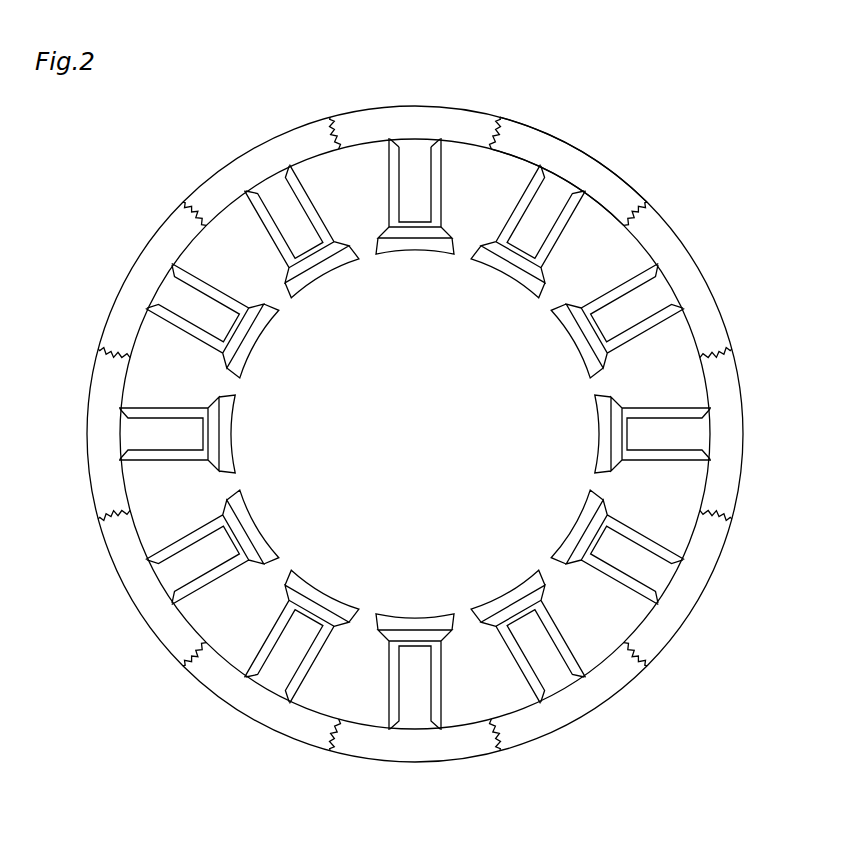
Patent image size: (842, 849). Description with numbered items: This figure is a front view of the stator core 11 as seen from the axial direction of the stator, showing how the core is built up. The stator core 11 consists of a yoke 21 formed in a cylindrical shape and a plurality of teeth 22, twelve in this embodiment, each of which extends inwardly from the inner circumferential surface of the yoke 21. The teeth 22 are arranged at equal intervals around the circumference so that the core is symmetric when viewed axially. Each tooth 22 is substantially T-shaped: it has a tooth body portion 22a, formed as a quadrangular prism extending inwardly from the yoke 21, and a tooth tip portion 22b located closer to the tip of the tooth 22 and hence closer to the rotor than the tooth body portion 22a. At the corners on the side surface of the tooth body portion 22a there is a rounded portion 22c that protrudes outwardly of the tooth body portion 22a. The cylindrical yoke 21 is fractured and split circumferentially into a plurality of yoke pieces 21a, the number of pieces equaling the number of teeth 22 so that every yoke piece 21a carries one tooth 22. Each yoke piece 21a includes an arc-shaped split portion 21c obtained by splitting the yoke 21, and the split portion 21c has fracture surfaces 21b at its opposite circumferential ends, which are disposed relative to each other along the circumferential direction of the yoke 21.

The stator core 11 is at (426, 385).
The yoke 21 is at (415, 385).
The yoke piece 21a is at (612, 162).
The fracture surface 21b is at (190, 197).
The split portion 21c is at (543, 150).
The tooth 22 is at (415, 381).
The tooth body portion 22a is at (405, 175).
The tooth tip portion 22b is at (417, 238).
The rounded portion 22c is at (447, 167).